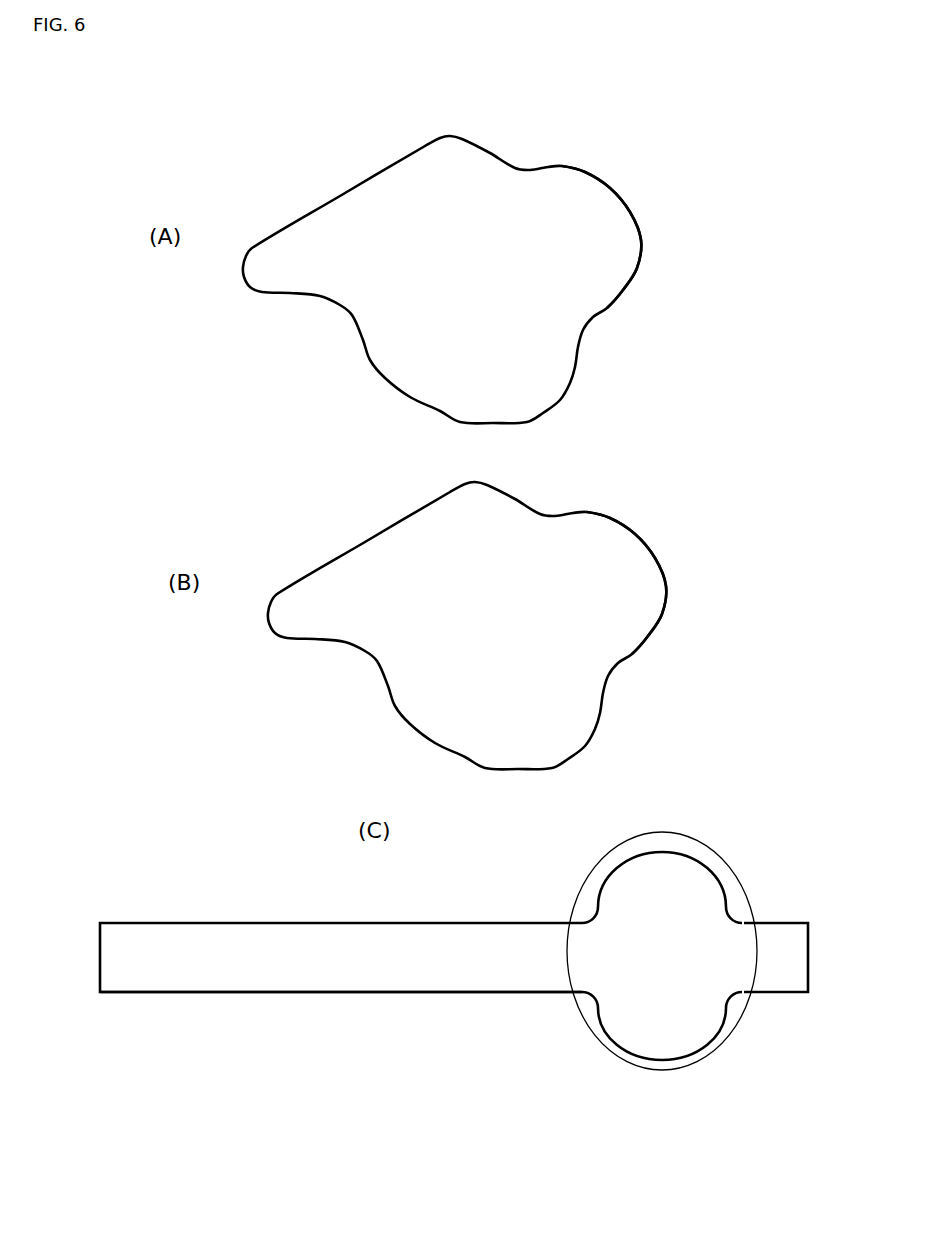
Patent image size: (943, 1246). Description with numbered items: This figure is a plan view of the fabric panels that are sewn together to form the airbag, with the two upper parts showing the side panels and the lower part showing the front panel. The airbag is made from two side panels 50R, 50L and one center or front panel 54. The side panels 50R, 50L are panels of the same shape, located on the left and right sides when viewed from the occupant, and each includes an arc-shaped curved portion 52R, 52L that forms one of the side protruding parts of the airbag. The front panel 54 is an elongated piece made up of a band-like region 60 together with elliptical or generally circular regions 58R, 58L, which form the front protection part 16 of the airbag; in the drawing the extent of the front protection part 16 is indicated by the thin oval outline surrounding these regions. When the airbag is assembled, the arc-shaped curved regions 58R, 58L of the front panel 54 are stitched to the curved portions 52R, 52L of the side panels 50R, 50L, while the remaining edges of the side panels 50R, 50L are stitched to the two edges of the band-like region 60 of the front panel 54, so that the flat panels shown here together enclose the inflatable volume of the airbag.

The side panel 50R is at (307, 211).
The arc-shaped curved portion 52R is at (641, 238).
The side panel 50L is at (335, 555).
The arc-shaped curved portion 52L is at (664, 565).
The front panel 54 is at (218, 923).
The band-like region 60 is at (369, 992).
The front protection part 16 is at (582, 890).
The elliptical or generally circular region 58R is at (672, 852).
The elliptical or generally circular region 58L is at (643, 1058).